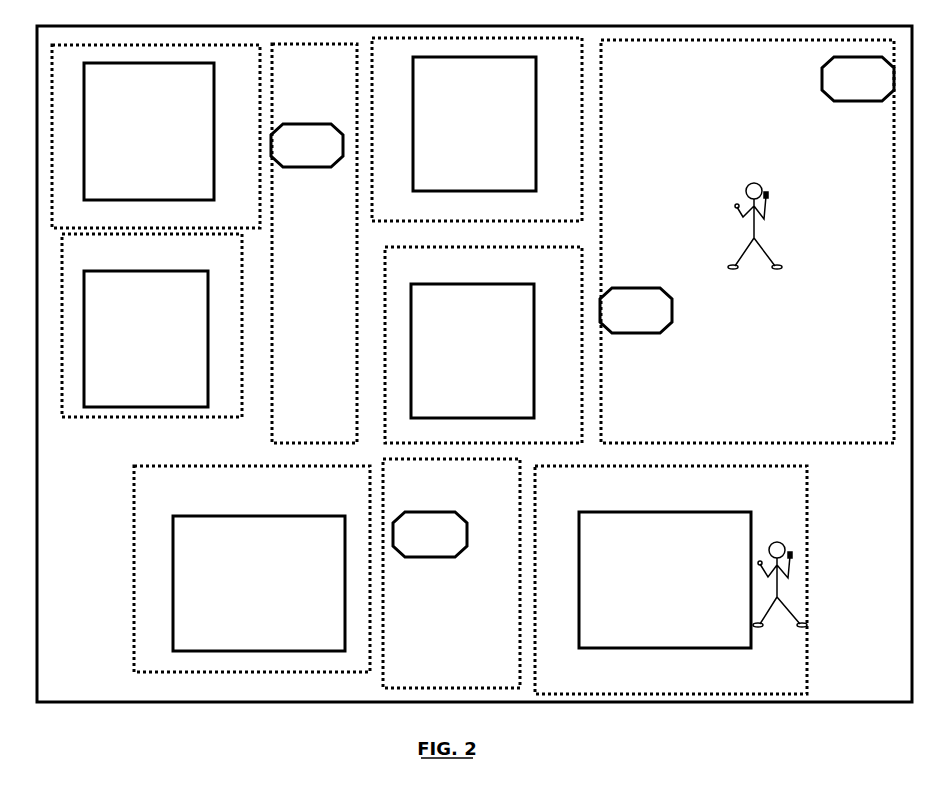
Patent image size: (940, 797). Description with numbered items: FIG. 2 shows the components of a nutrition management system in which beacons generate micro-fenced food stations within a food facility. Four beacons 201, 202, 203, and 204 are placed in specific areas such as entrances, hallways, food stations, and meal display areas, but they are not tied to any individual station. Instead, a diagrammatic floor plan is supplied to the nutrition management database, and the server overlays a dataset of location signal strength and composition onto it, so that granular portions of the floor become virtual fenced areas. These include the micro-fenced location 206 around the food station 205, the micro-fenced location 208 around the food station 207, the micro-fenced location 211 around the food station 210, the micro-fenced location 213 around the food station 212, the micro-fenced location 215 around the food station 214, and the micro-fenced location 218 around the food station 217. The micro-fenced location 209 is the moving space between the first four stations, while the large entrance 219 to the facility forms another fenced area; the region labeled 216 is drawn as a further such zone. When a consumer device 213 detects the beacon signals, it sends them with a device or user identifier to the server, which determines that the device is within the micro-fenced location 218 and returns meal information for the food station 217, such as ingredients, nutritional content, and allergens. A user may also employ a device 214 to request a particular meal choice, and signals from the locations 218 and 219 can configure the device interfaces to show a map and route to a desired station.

The beacon 201 is at (307, 145).
The beacon 202 is at (636, 310).
The beacon 203 is at (430, 534).
The beacon 204 is at (858, 79).
The food station 205 is at (149, 131).
The micro-fenced location 206 is at (156, 136).
The food station 207 is at (474, 124).
The micro-fenced location 208 is at (477, 129).
The micro-fenced location 209 is at (314, 243).
The food station 210 is at (146, 339).
The micro-fenced location 211 is at (152, 325).
The food station 212 is at (472, 351).
The micro-fenced location 213 is at (596, 437).
The food station 214 is at (477, 404).
The micro-fenced location 215 is at (252, 569).
The hallway 216 is at (451, 573).
The food station 217 is at (665, 580).
The micro-fenced location 218 is at (671, 580).
The large entrance 219 is at (747, 241).